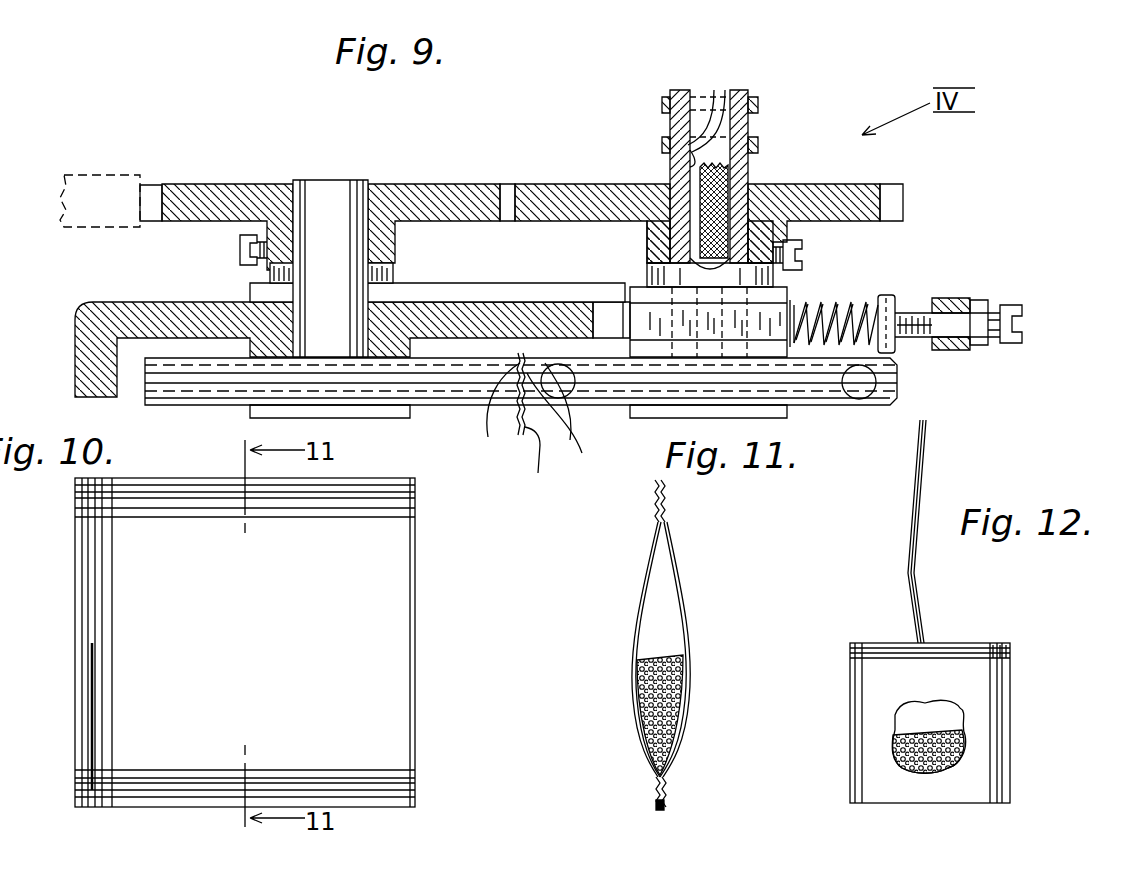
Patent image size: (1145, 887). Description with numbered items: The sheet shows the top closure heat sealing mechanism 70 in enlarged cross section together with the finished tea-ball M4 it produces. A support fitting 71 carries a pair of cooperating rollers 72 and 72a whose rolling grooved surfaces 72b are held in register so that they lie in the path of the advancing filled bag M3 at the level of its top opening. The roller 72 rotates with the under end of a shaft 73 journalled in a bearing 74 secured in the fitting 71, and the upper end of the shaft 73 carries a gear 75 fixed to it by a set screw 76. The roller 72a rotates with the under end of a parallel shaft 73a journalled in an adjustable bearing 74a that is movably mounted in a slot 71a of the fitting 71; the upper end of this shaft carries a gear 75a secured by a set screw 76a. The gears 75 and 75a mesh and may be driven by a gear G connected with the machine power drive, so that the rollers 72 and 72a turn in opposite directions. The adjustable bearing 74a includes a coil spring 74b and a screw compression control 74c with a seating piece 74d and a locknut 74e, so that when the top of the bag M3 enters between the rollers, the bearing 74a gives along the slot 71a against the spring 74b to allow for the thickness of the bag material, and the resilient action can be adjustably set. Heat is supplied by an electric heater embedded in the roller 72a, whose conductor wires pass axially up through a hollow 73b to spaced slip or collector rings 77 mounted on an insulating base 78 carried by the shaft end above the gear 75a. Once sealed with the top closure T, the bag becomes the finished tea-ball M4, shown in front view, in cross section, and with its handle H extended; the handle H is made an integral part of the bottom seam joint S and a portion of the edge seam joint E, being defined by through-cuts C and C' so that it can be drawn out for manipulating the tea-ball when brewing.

In FIG. 9, the top closure heat sealing mechanism 70 is at (942, 233).
In FIG. 9, the support fitting 71 is at (80, 360).
In FIG. 9, the slot 71a is at (603, 320).
In FIG. 9, the roller 72 is at (435, 405).
In FIG. 9, the roller 72a is at (845, 405).
In FIG. 9, the rolling grooved surfaces 72b is at (551, 418).
In FIG. 9, the shaft 73 is at (328, 200).
In FIG. 9, the shaft 73a is at (673, 188).
In FIG. 9, the hollow 73b is at (727, 160).
In FIG. 9, the bearing 74 is at (402, 293).
In FIG. 9, the adjustable bearing 74a is at (780, 293).
In FIG. 9, the coil spring 74b is at (847, 305).
In FIG. 9, the screw compression control 74c is at (1012, 307).
In FIG. 9, the seating piece 74d is at (912, 342).
In FIG. 9, the locknut 74e is at (983, 307).
In FIG. 9, the gear 75 is at (438, 184).
In FIG. 9, the gear 75a is at (873, 187).
In FIG. 9, the set screw 76 is at (240, 245).
In FIG. 9, the set screw 76a is at (802, 247).
In FIG. 9, the slip or collector rings 77 is at (745, 120).
In FIG. 9, the insulating base 78 is at (743, 93).
In FIG. 9, the gear G is at (108, 187).
In FIG. 9, the top closure T is at (530, 353).
In FIG. 10, the top closure T is at (322, 490).
In FIG. 11, the top closure T is at (665, 498).
In FIG. 12, the top closure T is at (1008, 738).
In FIG. 9, the filled bag M3 is at (539, 465).
In FIG. 10, the tea-ball M4 is at (278, 595).
In FIG. 11, the tea-ball M4 is at (652, 595).
In FIG. 12, the tea-ball M4 is at (967, 697).
In FIG. 10, the edge seam joint E is at (90, 588).
In FIG. 12, the edge seam joint E is at (957, 643).
In FIG. 10, the through-cut C is at (288, 754).
In FIG. 11, the through-cut C is at (687, 772).
In FIG. 12, the through-cut C is at (830, 735).
In FIG. 10, the through-cut C' is at (62, 716).
In FIG. 12, the through-cut C' is at (884, 622).
In FIG. 10, the handle H is at (80, 797).
In FIG. 11, the handle H is at (664, 800).
In FIG. 12, the handle H is at (915, 503).
In FIG. 10, the bottom seam joint S is at (387, 783).
In FIG. 11, the bottom seam joint S is at (655, 782).
In FIG. 12, the bottom seam joint S is at (850, 782).